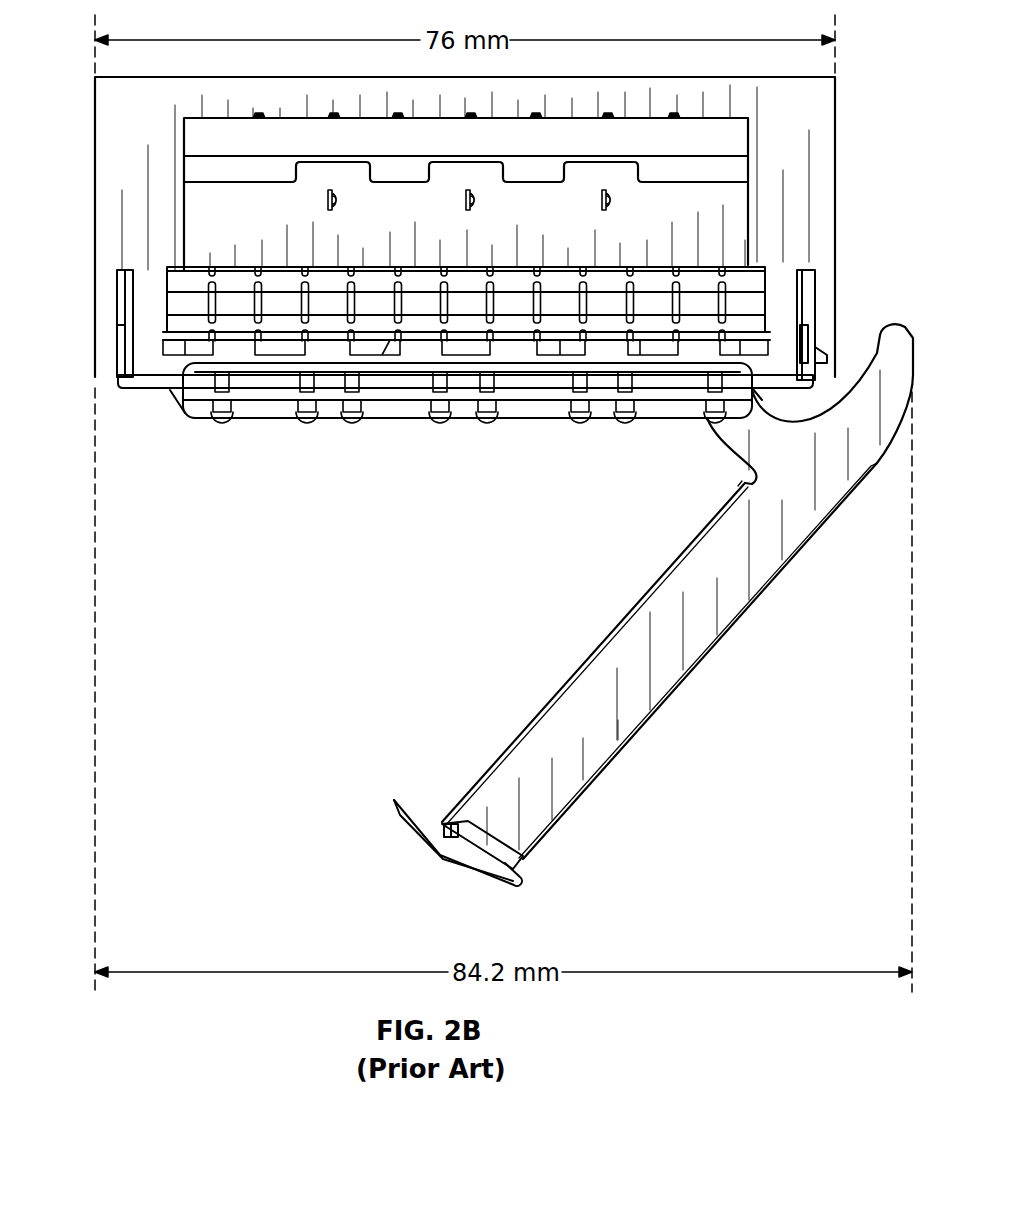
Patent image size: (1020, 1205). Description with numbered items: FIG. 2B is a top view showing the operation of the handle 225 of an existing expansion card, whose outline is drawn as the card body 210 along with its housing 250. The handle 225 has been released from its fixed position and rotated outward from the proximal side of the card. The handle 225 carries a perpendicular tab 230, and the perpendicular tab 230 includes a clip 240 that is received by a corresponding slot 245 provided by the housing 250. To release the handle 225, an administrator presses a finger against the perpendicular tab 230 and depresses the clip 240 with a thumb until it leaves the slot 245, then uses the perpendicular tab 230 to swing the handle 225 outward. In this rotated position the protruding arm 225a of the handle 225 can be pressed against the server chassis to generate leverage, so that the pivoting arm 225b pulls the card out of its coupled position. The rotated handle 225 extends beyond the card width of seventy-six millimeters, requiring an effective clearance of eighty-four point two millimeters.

The housing 210 is at (823, 153).
The handle 225 is at (665, 662).
The protruding arm 225a is at (898, 343).
The pivoting arm 225b is at (736, 434).
The perpendicular tab 230 is at (482, 837).
The clip 240 is at (413, 827).
The slot 245 is at (122, 384).
The housing 250 is at (785, 308).